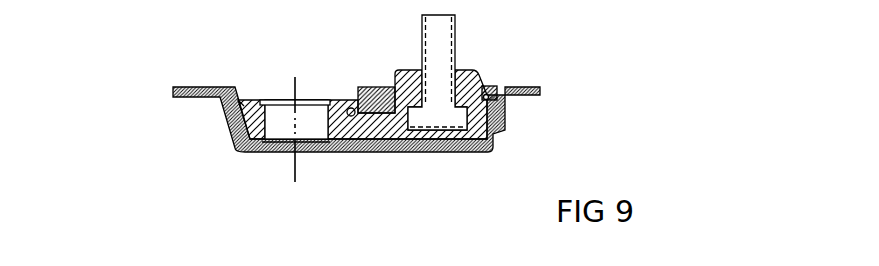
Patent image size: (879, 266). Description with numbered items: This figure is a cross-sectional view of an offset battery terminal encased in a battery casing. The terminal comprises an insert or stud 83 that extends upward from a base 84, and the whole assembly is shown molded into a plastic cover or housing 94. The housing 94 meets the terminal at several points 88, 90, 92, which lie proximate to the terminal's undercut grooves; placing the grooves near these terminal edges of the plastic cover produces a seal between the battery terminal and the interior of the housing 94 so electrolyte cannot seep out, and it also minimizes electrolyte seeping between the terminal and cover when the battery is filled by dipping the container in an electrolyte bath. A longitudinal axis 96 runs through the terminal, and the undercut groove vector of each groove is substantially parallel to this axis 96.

The insert or stud 83 is at (445, 36).
The base 84 is at (371, 131).
The point 88 is at (244, 100).
The point 90 is at (266, 145).
The point 92 is at (393, 82).
The plastic cover or housing 94 is at (531, 125).
The longitudinal axis 96 is at (296, 77).